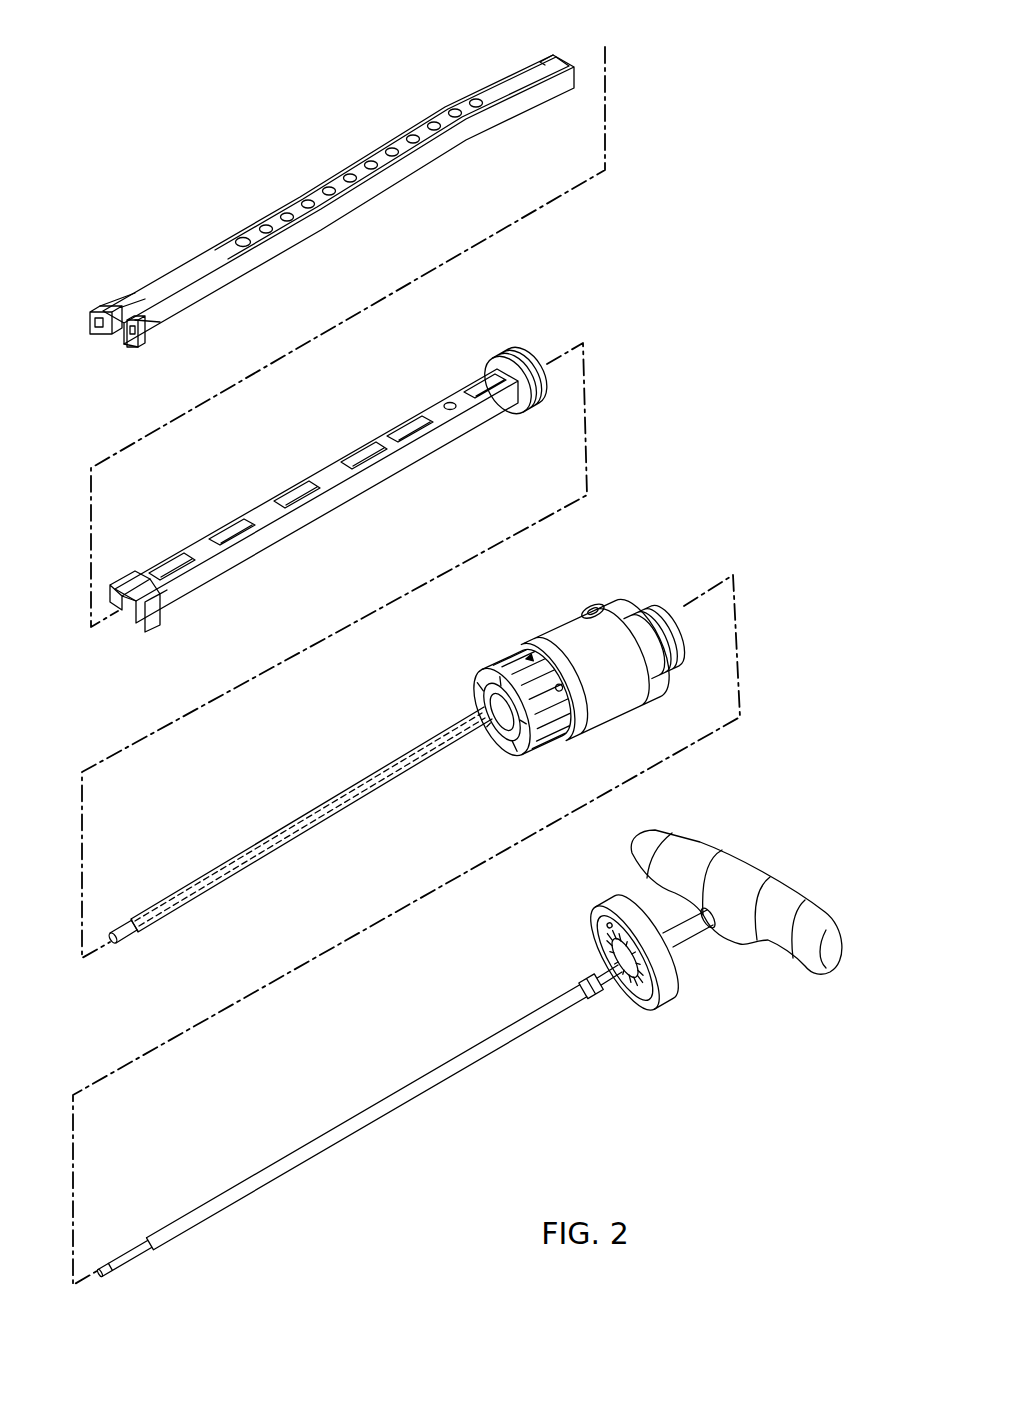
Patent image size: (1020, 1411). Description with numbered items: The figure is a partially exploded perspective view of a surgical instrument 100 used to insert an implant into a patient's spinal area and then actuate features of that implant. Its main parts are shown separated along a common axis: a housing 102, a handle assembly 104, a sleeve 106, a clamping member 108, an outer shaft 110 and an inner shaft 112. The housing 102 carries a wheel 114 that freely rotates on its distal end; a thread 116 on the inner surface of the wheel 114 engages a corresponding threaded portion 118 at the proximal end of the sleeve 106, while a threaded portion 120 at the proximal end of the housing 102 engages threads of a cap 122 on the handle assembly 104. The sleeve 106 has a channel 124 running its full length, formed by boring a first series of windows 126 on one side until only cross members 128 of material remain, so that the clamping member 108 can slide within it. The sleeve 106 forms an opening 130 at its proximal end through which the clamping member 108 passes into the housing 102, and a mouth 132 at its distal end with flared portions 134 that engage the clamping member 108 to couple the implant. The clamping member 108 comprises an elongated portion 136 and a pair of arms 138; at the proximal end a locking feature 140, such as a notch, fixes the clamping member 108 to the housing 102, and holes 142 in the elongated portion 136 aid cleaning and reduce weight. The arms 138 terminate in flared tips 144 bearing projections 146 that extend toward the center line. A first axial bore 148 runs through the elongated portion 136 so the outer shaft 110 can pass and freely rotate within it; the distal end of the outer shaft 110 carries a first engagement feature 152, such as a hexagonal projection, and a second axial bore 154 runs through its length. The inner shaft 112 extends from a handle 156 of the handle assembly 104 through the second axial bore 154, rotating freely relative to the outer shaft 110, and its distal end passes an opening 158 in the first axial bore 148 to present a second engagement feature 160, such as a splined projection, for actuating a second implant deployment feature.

The surgical instrument 100 is at (100, 120).
The housing 102 is at (448, 769).
The handle assembly 104 is at (474, 1048).
The sleeve 106 is at (376, 467).
The clamping member 108 is at (360, 193).
The outer shaft 110 is at (282, 853).
The inner shaft 112 is at (359, 1121).
The wheel 114 is at (572, 689).
The thread 116 is at (498, 744).
The threaded portion 118 is at (316, 487).
The threaded portion 120 is at (670, 667).
The cap 122 is at (670, 990).
The channel 124 is at (293, 493).
The first series of windows 126 is at (420, 425).
The cross members 128 is at (328, 482).
The opening 130 is at (532, 350).
The mouth 132 is at (131, 603).
The flared portions 134 is at (122, 587).
The elongated portion 136 is at (440, 114).
The pair of arms 138 is at (166, 275).
The locking feature 140 is at (538, 61).
The holes 142 is at (335, 187).
The tips 144 is at (92, 308).
The projections 146 is at (128, 342).
The first axial bore 148 is at (236, 240).
The first engagement feature 152 is at (124, 947).
The second axial bore 154 is at (263, 858).
The handle 156 is at (735, 934).
The opening 158 is at (111, 945).
The second engagement feature 160 is at (109, 1258).